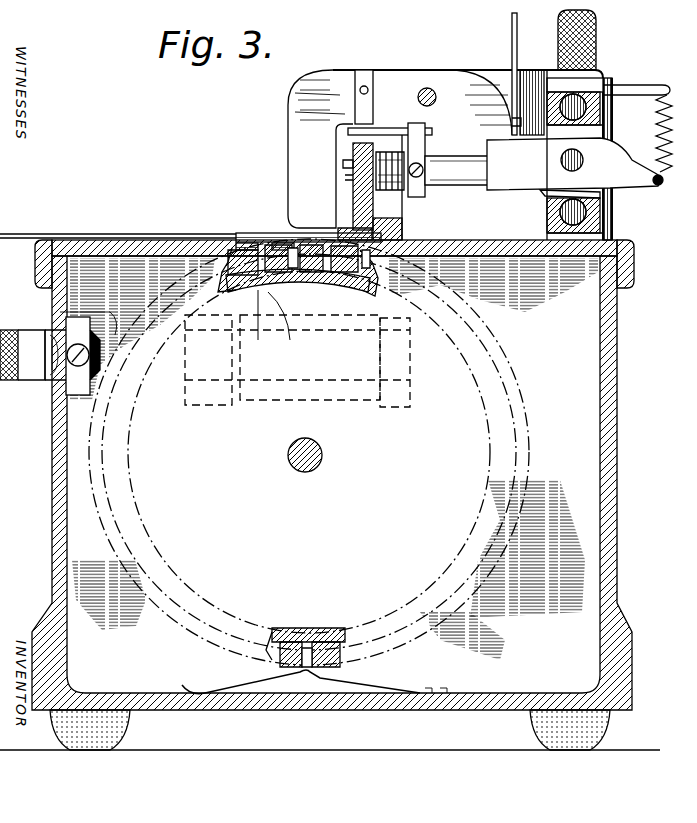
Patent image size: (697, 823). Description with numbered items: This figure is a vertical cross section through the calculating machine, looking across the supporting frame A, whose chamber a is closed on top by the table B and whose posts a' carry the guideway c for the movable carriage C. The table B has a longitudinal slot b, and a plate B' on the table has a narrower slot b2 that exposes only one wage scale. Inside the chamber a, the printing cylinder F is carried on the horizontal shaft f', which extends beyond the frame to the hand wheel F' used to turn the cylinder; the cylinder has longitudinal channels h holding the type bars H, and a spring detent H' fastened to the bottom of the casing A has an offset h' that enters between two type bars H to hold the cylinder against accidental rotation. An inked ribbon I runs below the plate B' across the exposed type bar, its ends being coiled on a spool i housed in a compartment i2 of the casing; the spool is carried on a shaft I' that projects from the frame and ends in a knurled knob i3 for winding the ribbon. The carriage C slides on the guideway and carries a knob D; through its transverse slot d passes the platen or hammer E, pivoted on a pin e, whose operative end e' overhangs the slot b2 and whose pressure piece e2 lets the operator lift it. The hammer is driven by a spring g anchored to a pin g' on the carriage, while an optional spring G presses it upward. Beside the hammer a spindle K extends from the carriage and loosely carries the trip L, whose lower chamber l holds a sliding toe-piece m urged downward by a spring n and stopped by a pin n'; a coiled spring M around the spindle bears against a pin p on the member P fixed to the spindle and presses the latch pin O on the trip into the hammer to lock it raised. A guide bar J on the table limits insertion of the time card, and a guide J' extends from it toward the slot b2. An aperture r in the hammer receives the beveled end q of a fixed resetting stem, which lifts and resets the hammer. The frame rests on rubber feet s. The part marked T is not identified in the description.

The supporting frame A is at (612, 342).
The chamber a is at (312, 452).
The posts a' is at (483, 81).
The table B is at (334, 247).
The plate B' is at (306, 222).
The longitudinal slot b is at (222, 238).
The slot b2 is at (288, 240).
The carriage C is at (606, 74).
The guideway rods c is at (570, 100).
The knob D is at (592, 70).
The transverse slot d is at (603, 135).
The platen E is at (343, 68).
The pin e is at (582, 154).
The operative end e' is at (320, 151).
The pressure piece e2 is at (290, 100).
The printing cylinder F is at (288, 329).
The hand wheel F' is at (309, 626).
The horizontal shaft f' is at (323, 455).
The spring G is at (575, 168).
The spring g is at (675, 134).
The pin g' is at (636, 73).
The type bars H is at (298, 280).
The spring detent H' is at (314, 671).
The longitudinal channels h is at (286, 281).
The offset h' is at (305, 689).
The ribbon I is at (258, 328).
The shaft I' is at (60, 343).
The spool i is at (346, 385).
The compartments i2 is at (220, 405).
The knurled knob i3 is at (22, 367).
The guide bar J is at (415, 230).
The guide J' is at (357, 288).
The spindle K is at (455, 185).
The trip L is at (290, 114).
The recess l is at (350, 222).
The coiled spring M is at (392, 150).
The toe-piece m is at (340, 220).
The spring n is at (413, 177).
The stop pin n' is at (425, 187).
The latch O is at (300, 93).
The member P is at (470, 200).
The pin p is at (348, 132).
The beveled conical end q is at (432, 90).
The aperture r is at (430, 88).
The rubber feet s is at (130, 738).
The top plate T is at (72, 235).